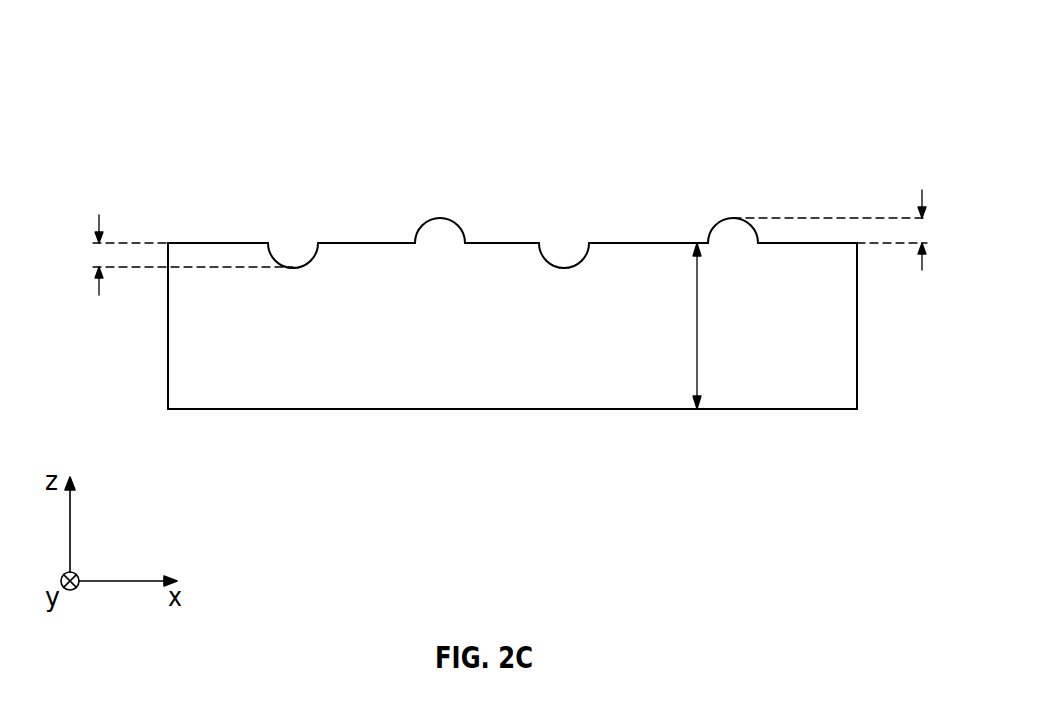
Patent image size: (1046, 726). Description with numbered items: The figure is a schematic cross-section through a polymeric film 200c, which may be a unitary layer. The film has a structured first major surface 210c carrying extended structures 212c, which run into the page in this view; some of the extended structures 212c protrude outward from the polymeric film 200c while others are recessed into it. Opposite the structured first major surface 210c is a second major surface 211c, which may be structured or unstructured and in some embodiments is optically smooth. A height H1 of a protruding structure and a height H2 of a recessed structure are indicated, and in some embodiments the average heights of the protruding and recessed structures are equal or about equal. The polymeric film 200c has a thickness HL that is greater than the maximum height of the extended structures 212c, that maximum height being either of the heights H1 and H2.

The polymeric film 200c is at (450, 274).
The structured first major surface 210c is at (200, 243).
The second major surface 211c is at (240, 410).
The extended structures 212c is at (440, 219).
The height of a protruding structure H1 is at (922, 195).
The height of a recessed structure H2 is at (99, 219).
The thickness of the polymeric film HL is at (697, 314).